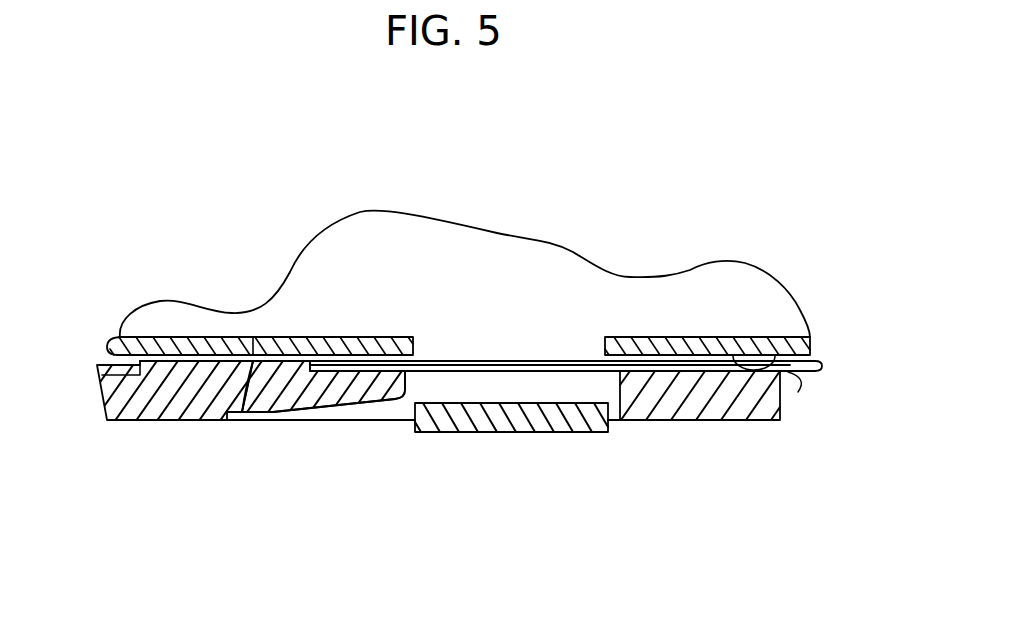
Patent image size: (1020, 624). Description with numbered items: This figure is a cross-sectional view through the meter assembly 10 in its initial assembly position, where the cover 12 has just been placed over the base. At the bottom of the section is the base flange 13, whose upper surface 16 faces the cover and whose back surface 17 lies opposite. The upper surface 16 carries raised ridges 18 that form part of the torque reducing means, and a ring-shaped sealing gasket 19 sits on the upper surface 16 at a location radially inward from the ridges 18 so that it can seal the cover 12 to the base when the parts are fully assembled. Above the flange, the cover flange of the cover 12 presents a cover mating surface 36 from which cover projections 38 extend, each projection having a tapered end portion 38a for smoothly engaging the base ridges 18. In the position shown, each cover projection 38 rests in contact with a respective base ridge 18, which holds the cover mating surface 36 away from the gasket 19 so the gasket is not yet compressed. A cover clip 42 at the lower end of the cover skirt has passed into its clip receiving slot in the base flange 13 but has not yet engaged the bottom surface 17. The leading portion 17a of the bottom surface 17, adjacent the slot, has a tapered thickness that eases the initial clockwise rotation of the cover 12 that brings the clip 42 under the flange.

The assembly 10 is at (660, 203).
The meter cover 12 is at (437, 220).
The base flange 13 is at (290, 390).
The upper surface 16 is at (798, 380).
The back surface 17 is at (165, 418).
The leading portion 17a is at (363, 405).
The ridges 18 is at (190, 368).
The sealing gasket 19 is at (490, 363).
The cover mating surface 36 is at (783, 338).
The cover projections 38 is at (293, 352).
The tapered end portions 38a is at (356, 352).
The cover clips 42 is at (530, 432).